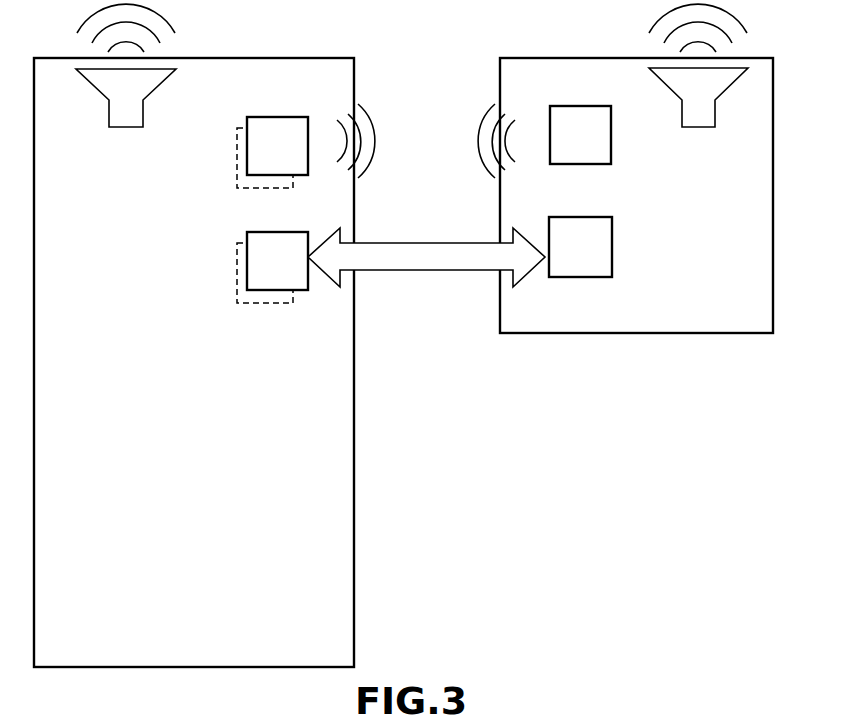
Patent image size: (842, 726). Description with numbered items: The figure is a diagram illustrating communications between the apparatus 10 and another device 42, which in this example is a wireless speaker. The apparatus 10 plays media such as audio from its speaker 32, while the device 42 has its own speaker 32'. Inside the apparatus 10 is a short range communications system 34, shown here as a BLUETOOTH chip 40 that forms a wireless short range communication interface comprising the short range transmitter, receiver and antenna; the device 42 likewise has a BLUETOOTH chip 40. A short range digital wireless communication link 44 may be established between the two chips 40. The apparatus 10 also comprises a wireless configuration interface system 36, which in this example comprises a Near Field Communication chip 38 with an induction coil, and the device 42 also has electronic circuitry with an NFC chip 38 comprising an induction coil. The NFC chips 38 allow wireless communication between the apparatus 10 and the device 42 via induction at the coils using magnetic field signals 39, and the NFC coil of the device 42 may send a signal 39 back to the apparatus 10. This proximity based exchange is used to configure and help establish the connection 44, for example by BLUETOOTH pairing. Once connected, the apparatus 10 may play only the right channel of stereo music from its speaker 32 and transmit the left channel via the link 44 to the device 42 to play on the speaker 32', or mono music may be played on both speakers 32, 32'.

The apparatus 10 is at (354, 470).
The device 42 is at (647, 333).
The speaker 32 is at (126, 80).
The speaker 32' is at (698, 79).
The short range communications system 34 is at (240, 277).
The wireless configuration interface system 36 is at (240, 165).
The Near Field Communication (NFC) chip 38 is at (280, 168).
The BLUETOOTH chip 40 is at (280, 283).
The magnetic field signals 39 is at (477, 140).
The short range digital wireless communication link 44 is at (417, 271).